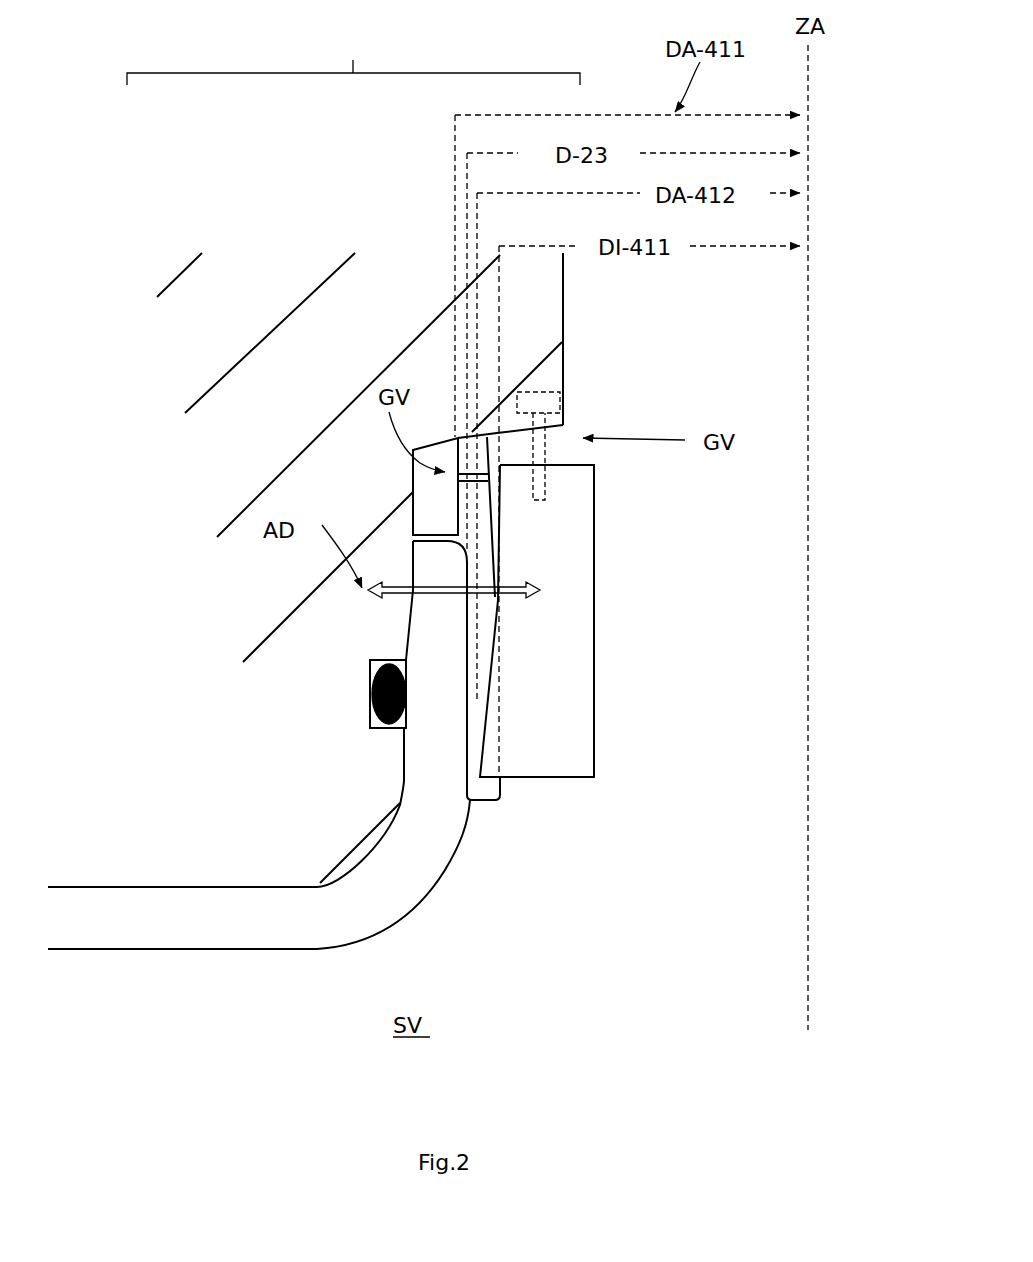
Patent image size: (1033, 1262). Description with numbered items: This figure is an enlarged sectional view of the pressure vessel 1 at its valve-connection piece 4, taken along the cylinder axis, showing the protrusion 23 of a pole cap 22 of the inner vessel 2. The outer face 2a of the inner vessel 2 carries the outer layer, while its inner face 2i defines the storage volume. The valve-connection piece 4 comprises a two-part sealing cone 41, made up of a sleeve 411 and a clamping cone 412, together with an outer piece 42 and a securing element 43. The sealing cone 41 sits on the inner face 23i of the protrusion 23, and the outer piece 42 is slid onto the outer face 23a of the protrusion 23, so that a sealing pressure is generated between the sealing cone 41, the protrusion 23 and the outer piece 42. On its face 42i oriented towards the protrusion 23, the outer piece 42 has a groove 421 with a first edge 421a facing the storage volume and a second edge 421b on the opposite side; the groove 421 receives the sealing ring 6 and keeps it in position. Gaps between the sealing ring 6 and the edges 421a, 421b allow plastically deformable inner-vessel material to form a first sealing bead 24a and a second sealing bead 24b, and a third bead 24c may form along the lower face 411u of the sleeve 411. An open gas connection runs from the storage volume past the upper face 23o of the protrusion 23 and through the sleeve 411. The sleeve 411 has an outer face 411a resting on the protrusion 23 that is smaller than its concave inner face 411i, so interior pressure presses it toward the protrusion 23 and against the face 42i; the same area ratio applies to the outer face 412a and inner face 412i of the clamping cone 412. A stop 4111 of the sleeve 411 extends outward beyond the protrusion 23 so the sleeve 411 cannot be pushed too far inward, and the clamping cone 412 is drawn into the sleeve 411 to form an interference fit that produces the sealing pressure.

The pressure vessel 1 is at (85, 487).
The inner vessel 2 is at (182, 692).
The pole cap 22 is at (173, 934).
The protrusion 23 is at (433, 528).
The upper face of the protrusion 23o is at (443, 563).
The outer face of the protrusion 23a is at (472, 813).
The inner face of the protrusion 23i is at (440, 887).
The outer face of inner vessel 2a is at (198, 893).
The inner face of inner vessel 2i is at (102, 960).
The first sealing bead 24a is at (318, 777).
The second sealing bead 24b is at (414, 667).
The third bead 24c is at (396, 842).
The valve-connection piece 4 is at (353, 52).
The two-part sealing cone 41 is at (484, 568).
The sleeve 411 is at (483, 618).
The stop of sleeve on protrusion 4111 is at (469, 425).
The outer face of sleeve 411a is at (470, 513).
The concave inner face of sleeve 411i is at (484, 787).
The lower face of sleeve 411u is at (486, 804).
The clamping cone 412 is at (565, 668).
The inner face of clamping cone 412i is at (597, 645).
The protruding outer face of clamping cone 412a is at (487, 732).
The outer piece 42 is at (255, 300).
The inner face of outer piece 42i is at (574, 342).
The groove 421 is at (363, 673).
The first edge 421a is at (366, 690).
The second edge 421b is at (395, 658).
The securing element 43 is at (540, 384).
The sealing ring 6 is at (367, 687).